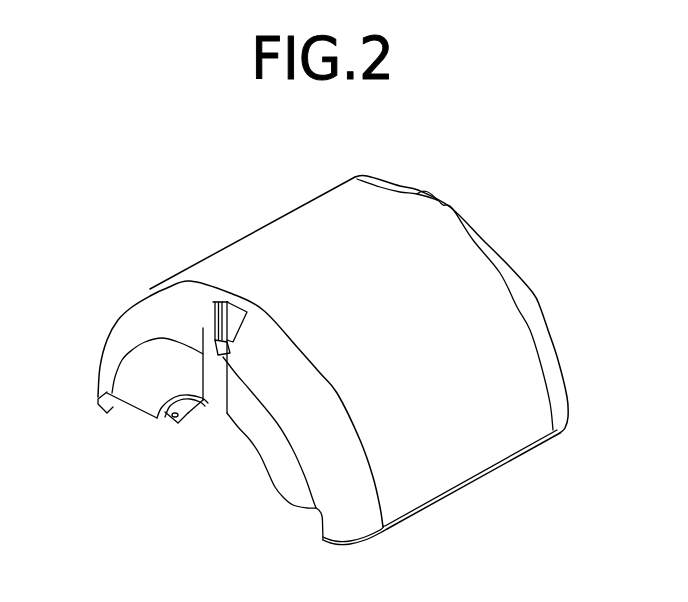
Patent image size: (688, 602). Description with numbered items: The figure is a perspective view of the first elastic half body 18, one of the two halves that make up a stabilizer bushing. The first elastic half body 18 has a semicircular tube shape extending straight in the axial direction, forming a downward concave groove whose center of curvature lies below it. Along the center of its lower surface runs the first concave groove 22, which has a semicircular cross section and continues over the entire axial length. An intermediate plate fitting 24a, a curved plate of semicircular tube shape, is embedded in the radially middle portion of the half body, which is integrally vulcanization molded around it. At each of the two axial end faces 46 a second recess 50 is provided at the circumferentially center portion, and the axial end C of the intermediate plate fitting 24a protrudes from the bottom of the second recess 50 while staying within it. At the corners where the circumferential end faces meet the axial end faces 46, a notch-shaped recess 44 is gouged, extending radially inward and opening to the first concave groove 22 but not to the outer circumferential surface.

The first elastic half body 18 is at (528, 178).
The first concave groove 22 is at (253, 447).
The intermediate plate fitting 24a is at (217, 337).
The recess 44 is at (122, 405).
The axial end face 46 is at (521, 278).
The second recess 50 is at (204, 352).
The axial end of the intermediate plate fitting C is at (219, 357).